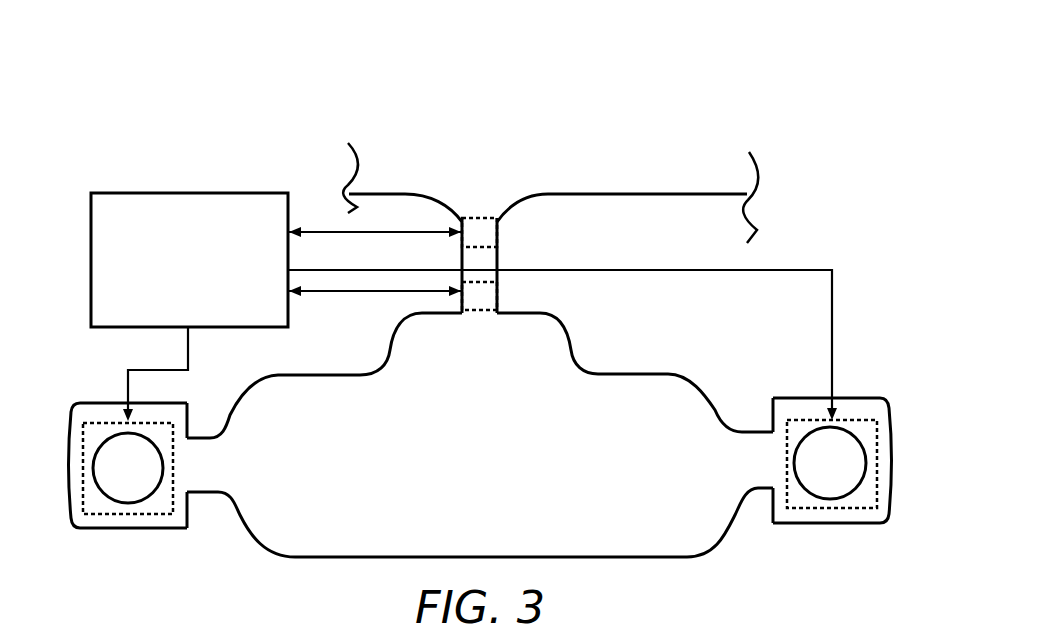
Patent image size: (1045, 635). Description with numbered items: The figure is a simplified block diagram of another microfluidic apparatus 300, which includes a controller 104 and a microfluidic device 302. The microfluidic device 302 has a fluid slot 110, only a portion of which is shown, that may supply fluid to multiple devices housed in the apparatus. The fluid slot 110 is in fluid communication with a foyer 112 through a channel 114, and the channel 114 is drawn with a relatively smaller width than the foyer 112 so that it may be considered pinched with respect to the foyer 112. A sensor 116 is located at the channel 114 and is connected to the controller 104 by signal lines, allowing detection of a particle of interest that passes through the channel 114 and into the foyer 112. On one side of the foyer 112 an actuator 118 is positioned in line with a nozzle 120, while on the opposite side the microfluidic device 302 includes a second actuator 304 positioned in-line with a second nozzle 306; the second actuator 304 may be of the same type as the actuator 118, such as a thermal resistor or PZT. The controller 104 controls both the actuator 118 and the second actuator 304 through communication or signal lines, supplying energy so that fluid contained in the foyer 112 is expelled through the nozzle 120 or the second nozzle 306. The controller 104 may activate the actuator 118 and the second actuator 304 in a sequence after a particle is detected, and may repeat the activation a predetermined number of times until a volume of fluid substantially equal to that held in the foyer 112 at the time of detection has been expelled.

The microfluidic apparatus 300 is at (383, 63).
The microfluidic device 302 is at (835, 205).
The controller 104 is at (207, 284).
The fluid slot 110 is at (597, 149).
The channel 114 is at (500, 252).
The sensor 116 is at (458, 177).
The foyer 112 is at (497, 472).
The actuator 118 is at (148, 514).
The nozzle 120 is at (107, 500).
The second actuator 304 is at (793, 418).
The second nozzle 306 is at (813, 500).